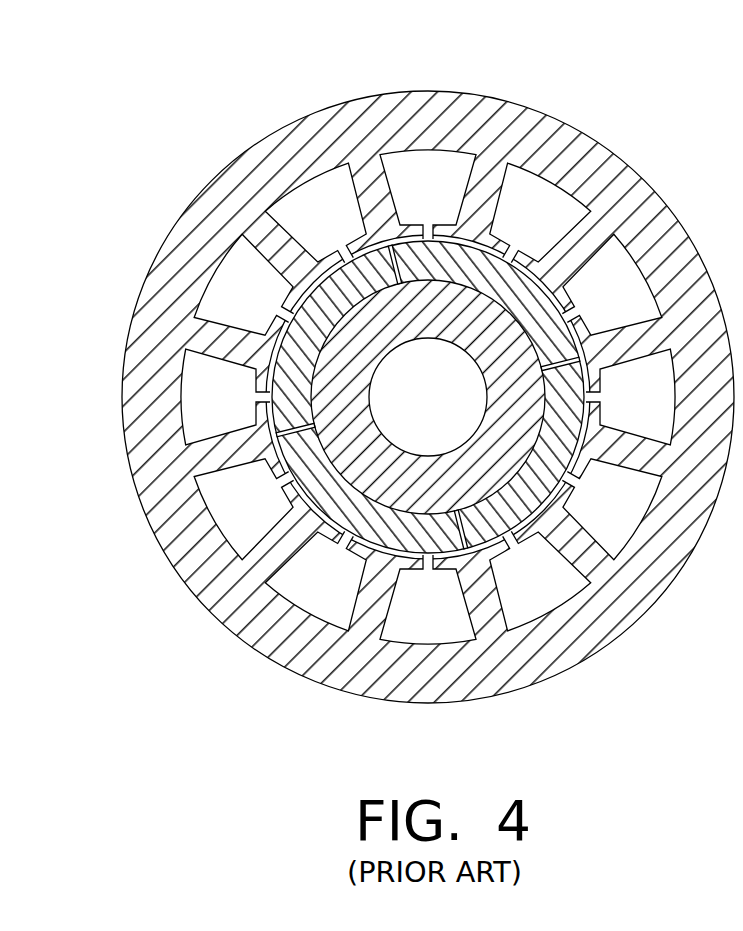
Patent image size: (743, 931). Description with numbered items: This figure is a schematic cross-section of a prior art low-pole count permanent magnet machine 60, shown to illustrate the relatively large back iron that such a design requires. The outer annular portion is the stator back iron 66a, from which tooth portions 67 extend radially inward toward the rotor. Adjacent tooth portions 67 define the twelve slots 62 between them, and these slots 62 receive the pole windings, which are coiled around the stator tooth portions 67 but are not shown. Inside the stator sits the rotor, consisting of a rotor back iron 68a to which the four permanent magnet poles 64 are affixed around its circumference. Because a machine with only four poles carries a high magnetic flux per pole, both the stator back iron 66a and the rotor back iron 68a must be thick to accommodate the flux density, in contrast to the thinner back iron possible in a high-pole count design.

The low-pole count machine 60 is at (428, 376).
The slots 62 is at (428, 397).
The poles 64 is at (567, 318).
The stator back iron 66a is at (269, 134).
The tooth portions 67 is at (393, 183).
The rotor back iron 68a is at (393, 443).